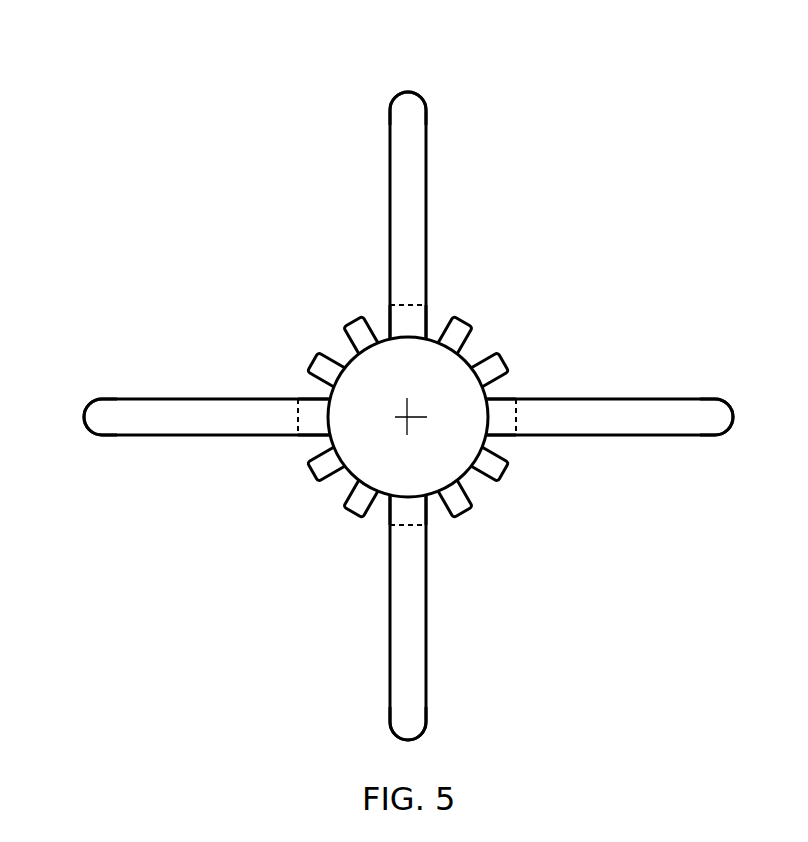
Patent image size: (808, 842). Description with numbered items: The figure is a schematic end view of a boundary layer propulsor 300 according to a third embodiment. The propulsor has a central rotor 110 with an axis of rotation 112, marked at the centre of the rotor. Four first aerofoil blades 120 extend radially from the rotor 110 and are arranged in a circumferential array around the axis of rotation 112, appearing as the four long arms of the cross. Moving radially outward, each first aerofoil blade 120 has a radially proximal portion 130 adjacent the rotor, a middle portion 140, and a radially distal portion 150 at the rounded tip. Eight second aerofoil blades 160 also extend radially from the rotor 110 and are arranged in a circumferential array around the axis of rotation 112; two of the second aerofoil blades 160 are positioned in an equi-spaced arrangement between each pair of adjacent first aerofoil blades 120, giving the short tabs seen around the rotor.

The boundary layer propulsor 300 is at (670, 126).
The rotor 110 is at (383, 495).
The axis of rotation 112 is at (396, 417).
The first aerofoil blade 120 is at (417, 91).
The radially proximal portion 130 is at (427, 319).
The middle portion 140 is at (427, 303).
The radially distal portion 150 is at (427, 130).
The second aerofoil blade 160 is at (352, 322).